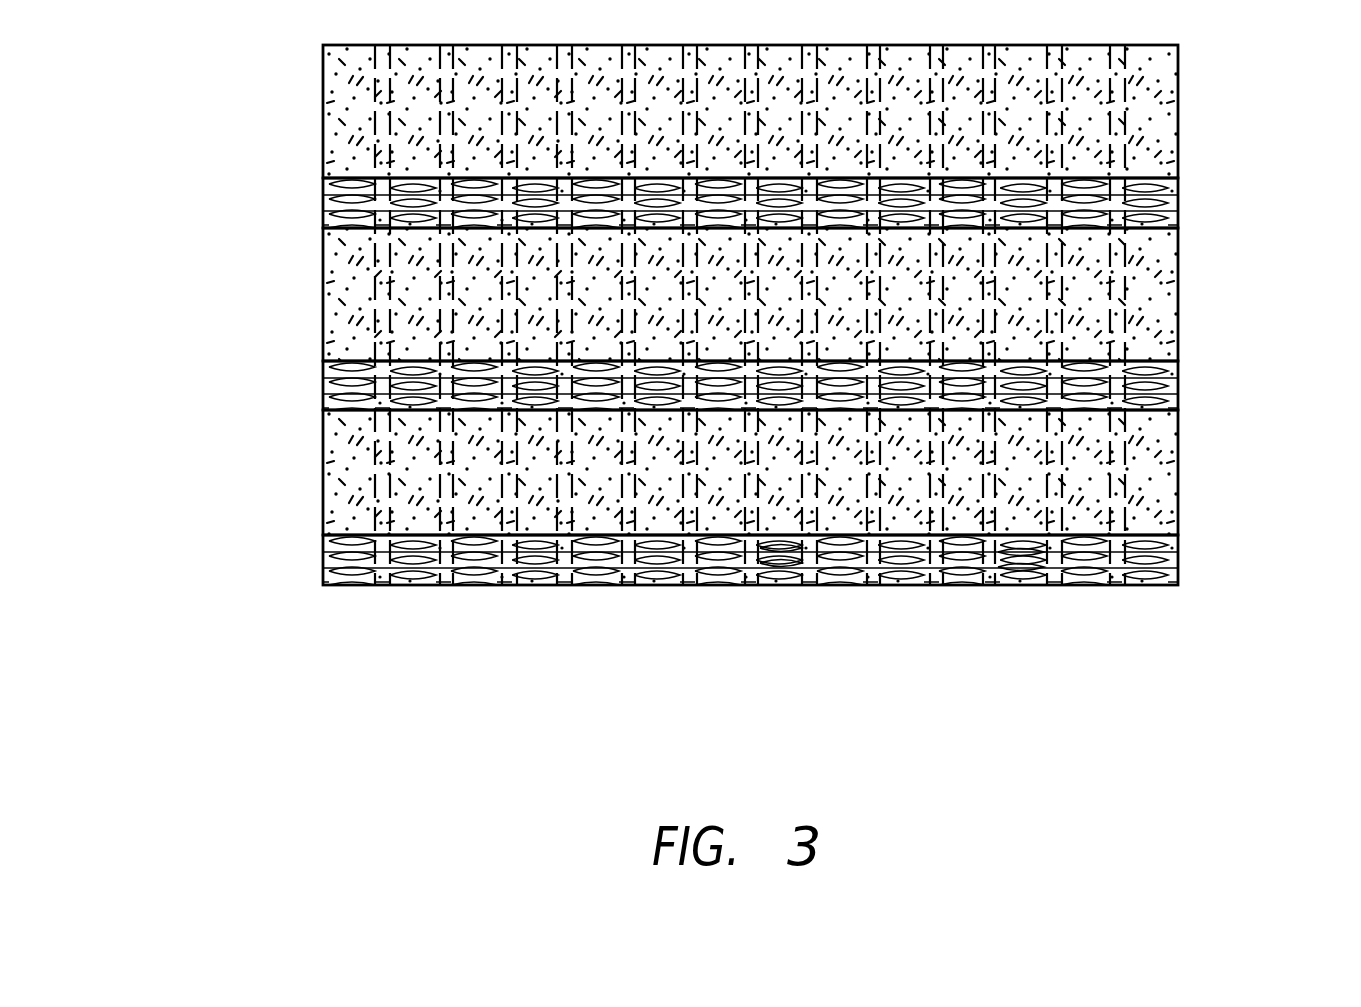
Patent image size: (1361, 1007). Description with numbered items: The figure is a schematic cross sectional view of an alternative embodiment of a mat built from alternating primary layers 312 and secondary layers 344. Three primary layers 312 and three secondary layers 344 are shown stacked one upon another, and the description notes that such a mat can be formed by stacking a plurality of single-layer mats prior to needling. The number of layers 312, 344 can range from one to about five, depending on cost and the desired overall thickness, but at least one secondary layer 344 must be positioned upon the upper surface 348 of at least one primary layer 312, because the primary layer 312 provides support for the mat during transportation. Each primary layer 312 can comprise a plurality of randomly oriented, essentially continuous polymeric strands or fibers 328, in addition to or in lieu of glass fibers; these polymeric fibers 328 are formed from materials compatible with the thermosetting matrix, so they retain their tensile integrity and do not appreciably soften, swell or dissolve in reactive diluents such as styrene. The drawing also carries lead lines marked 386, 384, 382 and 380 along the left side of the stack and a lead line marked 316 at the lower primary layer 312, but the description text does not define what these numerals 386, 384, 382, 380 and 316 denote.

The secondary layer 344 is at (1178, 297).
The primary layer 312 is at (1178, 392).
The second absorbent layer 386 is at (323, 285).
The second tissue layer 384 is at (323, 402).
The third absorbent layer 382 is at (323, 492).
The bottom tissue layer 380 is at (323, 578).
The upper surface 348 is at (516, 540).
The polymeric fibers 328 is at (772, 567).
The fibers 316 is at (1022, 568).